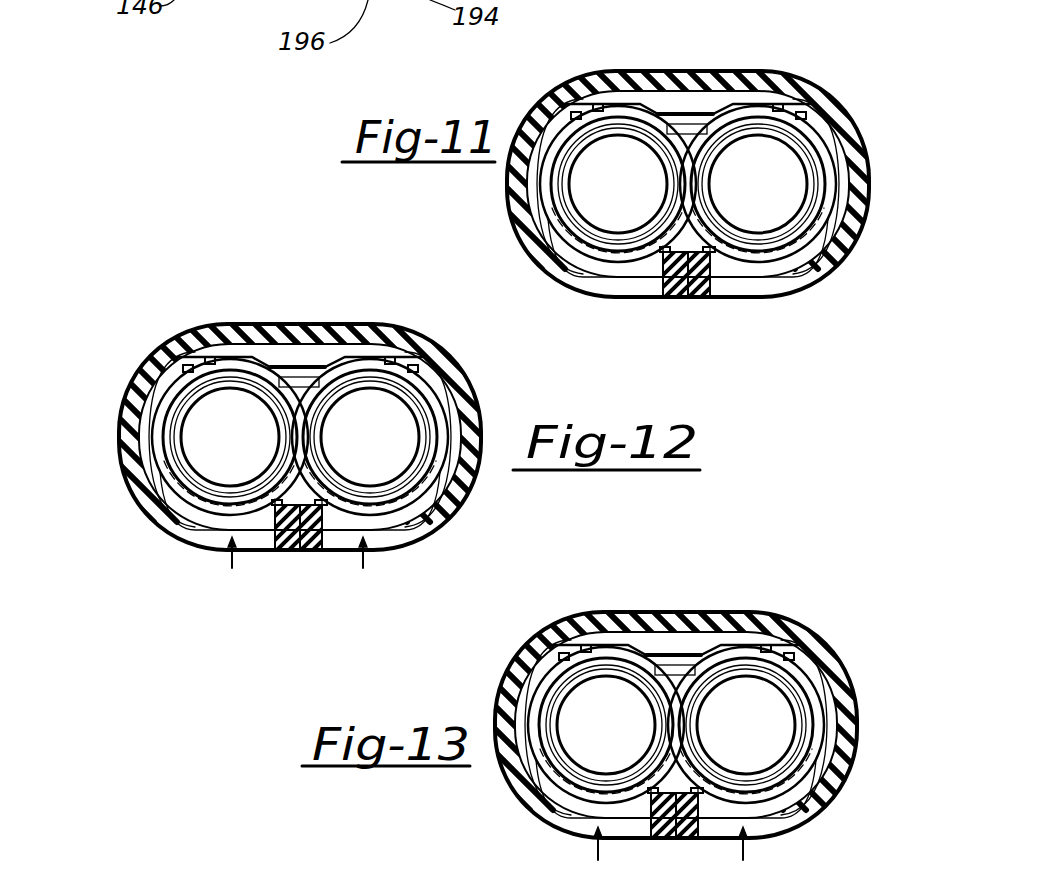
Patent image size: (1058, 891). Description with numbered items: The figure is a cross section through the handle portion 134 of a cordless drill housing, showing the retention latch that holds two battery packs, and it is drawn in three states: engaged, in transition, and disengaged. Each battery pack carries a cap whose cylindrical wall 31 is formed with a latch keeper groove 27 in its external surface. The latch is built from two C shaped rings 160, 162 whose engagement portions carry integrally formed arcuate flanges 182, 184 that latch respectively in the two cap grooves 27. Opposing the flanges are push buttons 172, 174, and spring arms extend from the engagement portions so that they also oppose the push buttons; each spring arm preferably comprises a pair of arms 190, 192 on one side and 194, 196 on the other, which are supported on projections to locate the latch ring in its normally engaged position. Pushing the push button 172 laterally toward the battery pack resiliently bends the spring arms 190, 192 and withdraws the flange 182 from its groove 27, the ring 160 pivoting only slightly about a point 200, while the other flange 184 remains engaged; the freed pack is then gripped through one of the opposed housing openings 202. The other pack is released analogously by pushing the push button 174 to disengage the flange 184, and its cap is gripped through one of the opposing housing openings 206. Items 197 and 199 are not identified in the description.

In FIG. 11, the latch keeper groove 27 is at (688, 184).
In FIG. 12, the latch keeper groove 27 is at (300, 437).
In FIG. 13, the latch keeper groove 27 is at (676, 725).
In FIG. 11, the cylindrical wall 31 is at (688, 184).
In FIG. 12, the cylindrical wall 31 is at (300, 437).
In FIG. 13, the cylindrical wall 31 is at (676, 725).
In FIG. 11, the handle portion 134 is at (741, 184).
In FIG. 12, the handle portion 134 is at (346, 437).
In FIG. 11, the C shaped ring 160 is at (586, 212).
In FIG. 12, the C shaped ring 160 is at (189, 456).
In FIG. 13, the C shaped ring 160 is at (554, 740).
In FIG. 11, the C shaped ring 162 is at (804, 206).
In FIG. 12, the C shaped ring 162 is at (411, 462).
In FIG. 13, the C shaped ring 162 is at (790, 749).
In FIG. 11, the push button 172 is at (605, 291).
In FIG. 12, the push button 172 is at (201, 540).
In FIG. 13, the push button 172 is at (575, 819).
In FIG. 11, the push button 174 is at (770, 290).
In FIG. 12, the push button 174 is at (381, 547).
In FIG. 13, the push button 174 is at (763, 821).
In FIG. 11, the arcuate flange 182 is at (688, 57).
In FIG. 12, the arcuate flange 182 is at (300, 316).
In FIG. 13, the arcuate flange 182 is at (676, 605).
In FIG. 11, the arcuate flange 184 is at (722, 71).
In FIG. 12, the arcuate flange 184 is at (345, 317).
In FIG. 13, the arcuate flange 184 is at (745, 613).
In FIG. 11, the spring arm 190 is at (653, 170).
In FIG. 12, the spring arm 190 is at (353, 422).
In FIG. 13, the spring arm 190 is at (647, 711).
In FIG. 11, the spring arm 192 is at (595, 62).
In FIG. 12, the spring arm 192 is at (201, 317).
In FIG. 11, the spring arm 194 is at (819, 67).
In FIG. 11, the spring arm 196 is at (859, 86).
In FIG. 12, the spring arm 196 is at (469, 350).
In FIG. 13, the spring arm 196 is at (848, 635).
In FIG. 13, the left fastener 197 is at (549, 612).
In FIG. 12, the right upper fastener 199 is at (431, 319).
In FIG. 13, the right upper fastener 199 is at (823, 613).
In FIG. 12, the pivot point 200 is at (310, 439).
In FIG. 13, the pivot point 200 is at (690, 727).
In FIG. 11, the housing opening 202 is at (685, 307).
In FIG. 12, the housing opening 202 is at (273, 566).
In FIG. 13, the housing opening 202 is at (673, 836).
In FIG. 11, the housing opening 206 is at (689, 311).
In FIG. 12, the housing opening 206 is at (297, 579).
In FIG. 13, the housing opening 206 is at (673, 836).